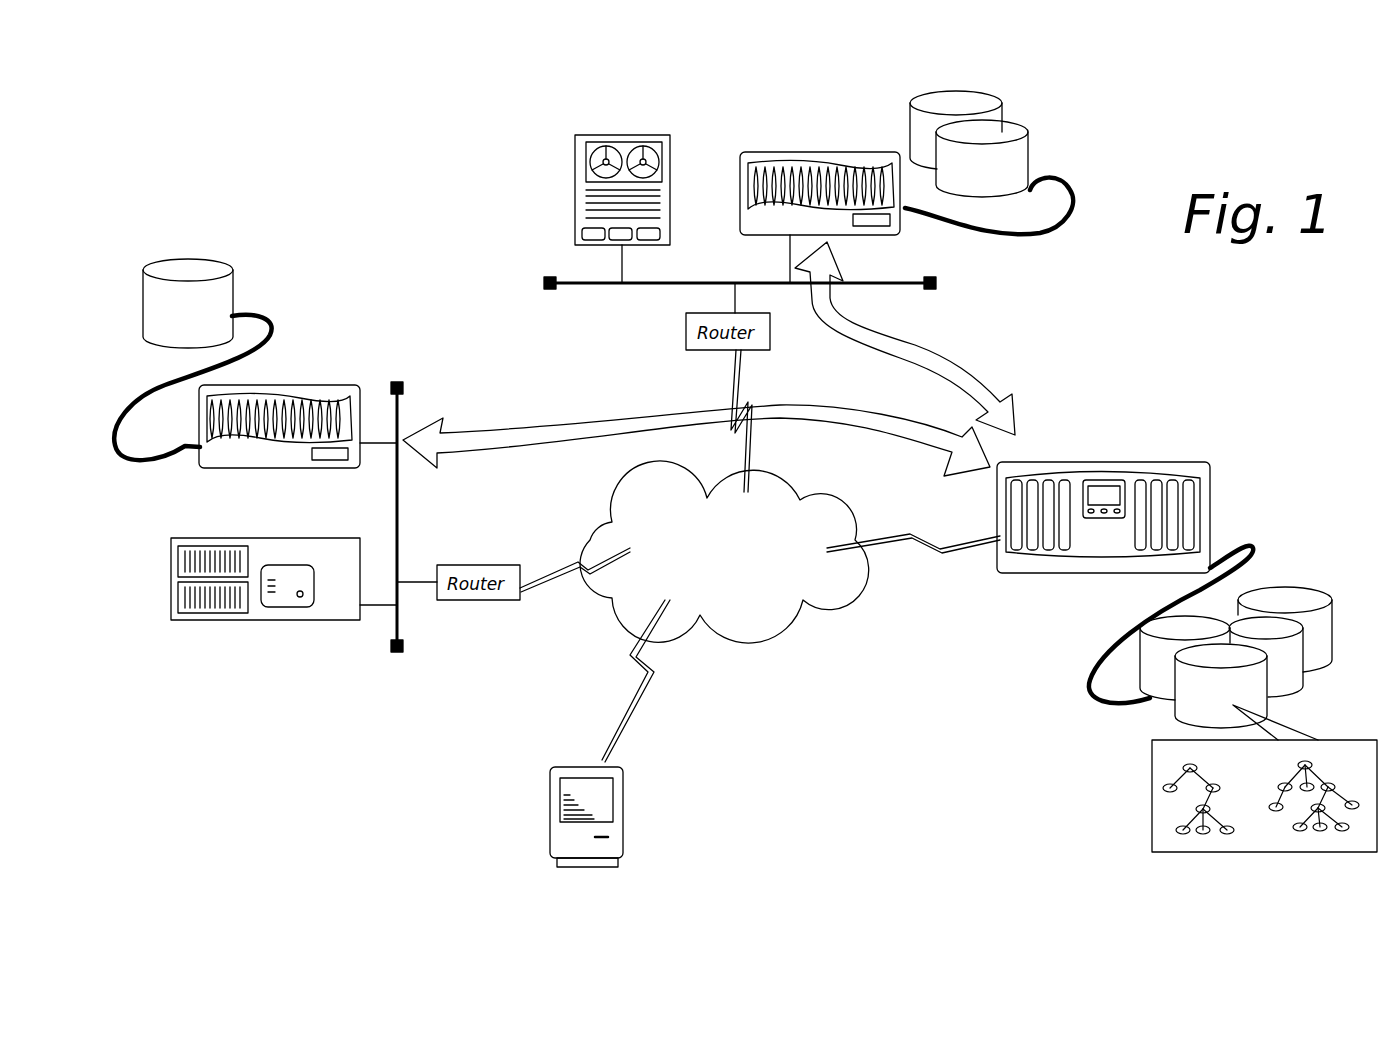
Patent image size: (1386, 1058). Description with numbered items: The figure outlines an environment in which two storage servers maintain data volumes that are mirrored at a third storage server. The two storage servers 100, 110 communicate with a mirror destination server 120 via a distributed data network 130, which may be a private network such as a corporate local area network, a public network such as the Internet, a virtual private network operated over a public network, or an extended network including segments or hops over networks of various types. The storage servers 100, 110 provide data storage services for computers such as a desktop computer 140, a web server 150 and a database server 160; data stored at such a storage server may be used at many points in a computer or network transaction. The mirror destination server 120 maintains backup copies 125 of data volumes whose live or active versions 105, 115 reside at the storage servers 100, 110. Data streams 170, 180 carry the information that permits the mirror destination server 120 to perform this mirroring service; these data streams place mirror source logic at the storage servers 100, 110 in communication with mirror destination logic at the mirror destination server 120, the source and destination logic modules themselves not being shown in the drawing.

The storage server 100 is at (205, 470).
The active data volume 105 is at (222, 336).
The storage server 110 is at (783, 150).
The active data volume 115 is at (1048, 112).
The mirror destination server 120 is at (1174, 462).
The backup copies 125 is at (1138, 813).
The distributed data network 130 is at (846, 587).
The desktop computer 140 is at (621, 860).
The web server 150 is at (196, 622).
The database server 160 is at (575, 165).
The data stream 170 is at (520, 435).
The data stream 180 is at (973, 368).